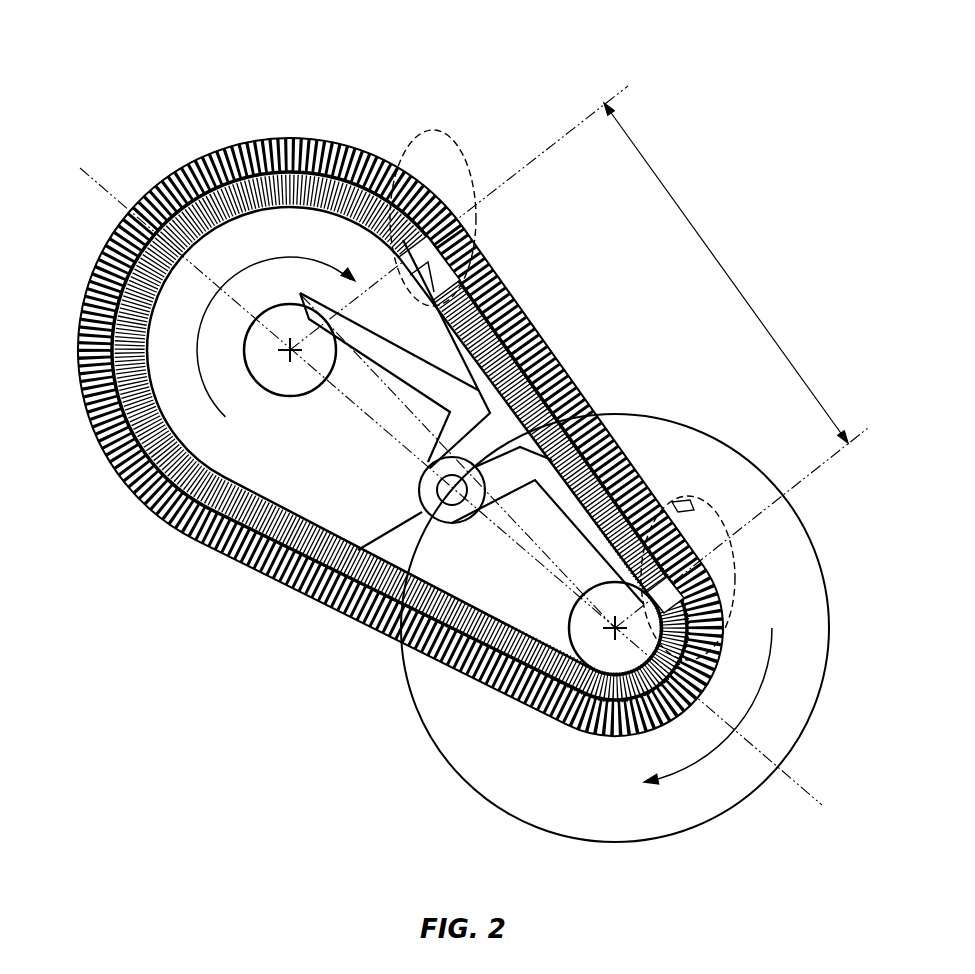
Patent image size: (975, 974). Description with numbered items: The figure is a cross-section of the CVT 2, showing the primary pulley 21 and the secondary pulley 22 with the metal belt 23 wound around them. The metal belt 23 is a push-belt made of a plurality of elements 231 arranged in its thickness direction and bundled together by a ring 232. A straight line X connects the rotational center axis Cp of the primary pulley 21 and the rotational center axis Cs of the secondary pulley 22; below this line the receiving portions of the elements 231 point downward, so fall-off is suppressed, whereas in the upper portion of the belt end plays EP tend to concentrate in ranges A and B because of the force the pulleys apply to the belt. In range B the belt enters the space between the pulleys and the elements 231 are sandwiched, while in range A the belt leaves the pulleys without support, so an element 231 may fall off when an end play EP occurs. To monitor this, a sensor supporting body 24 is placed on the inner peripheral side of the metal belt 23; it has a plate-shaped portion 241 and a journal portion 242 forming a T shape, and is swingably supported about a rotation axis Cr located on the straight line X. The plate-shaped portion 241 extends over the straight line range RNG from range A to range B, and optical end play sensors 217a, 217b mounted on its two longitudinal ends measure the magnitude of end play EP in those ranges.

The CVT 2 is at (566, 74).
The primary pulley 21 is at (705, 790).
The secondary pulley 22 is at (170, 310).
The metal belt 23 is at (400, 403).
The element 231 is at (262, 143).
The ring 232 is at (345, 170).
The sensor supporting body 24 is at (468, 478).
The plate-shaped portion 241 is at (540, 398).
The journal portion 242 is at (440, 500).
The end play sensor 217a is at (423, 283).
The end play sensor 217b is at (710, 573).
The end play EP is at (436, 260).
The range A is at (433, 130).
The range B is at (712, 498).
The straight line range RNG is at (579, 357).
The rotational center axis of the secondary pulley Cs is at (290, 350).
The rotational center axis of the primary pulley Cp is at (615, 628).
The rotation axis Cr is at (452, 490).
The straight line X is at (458, 486).